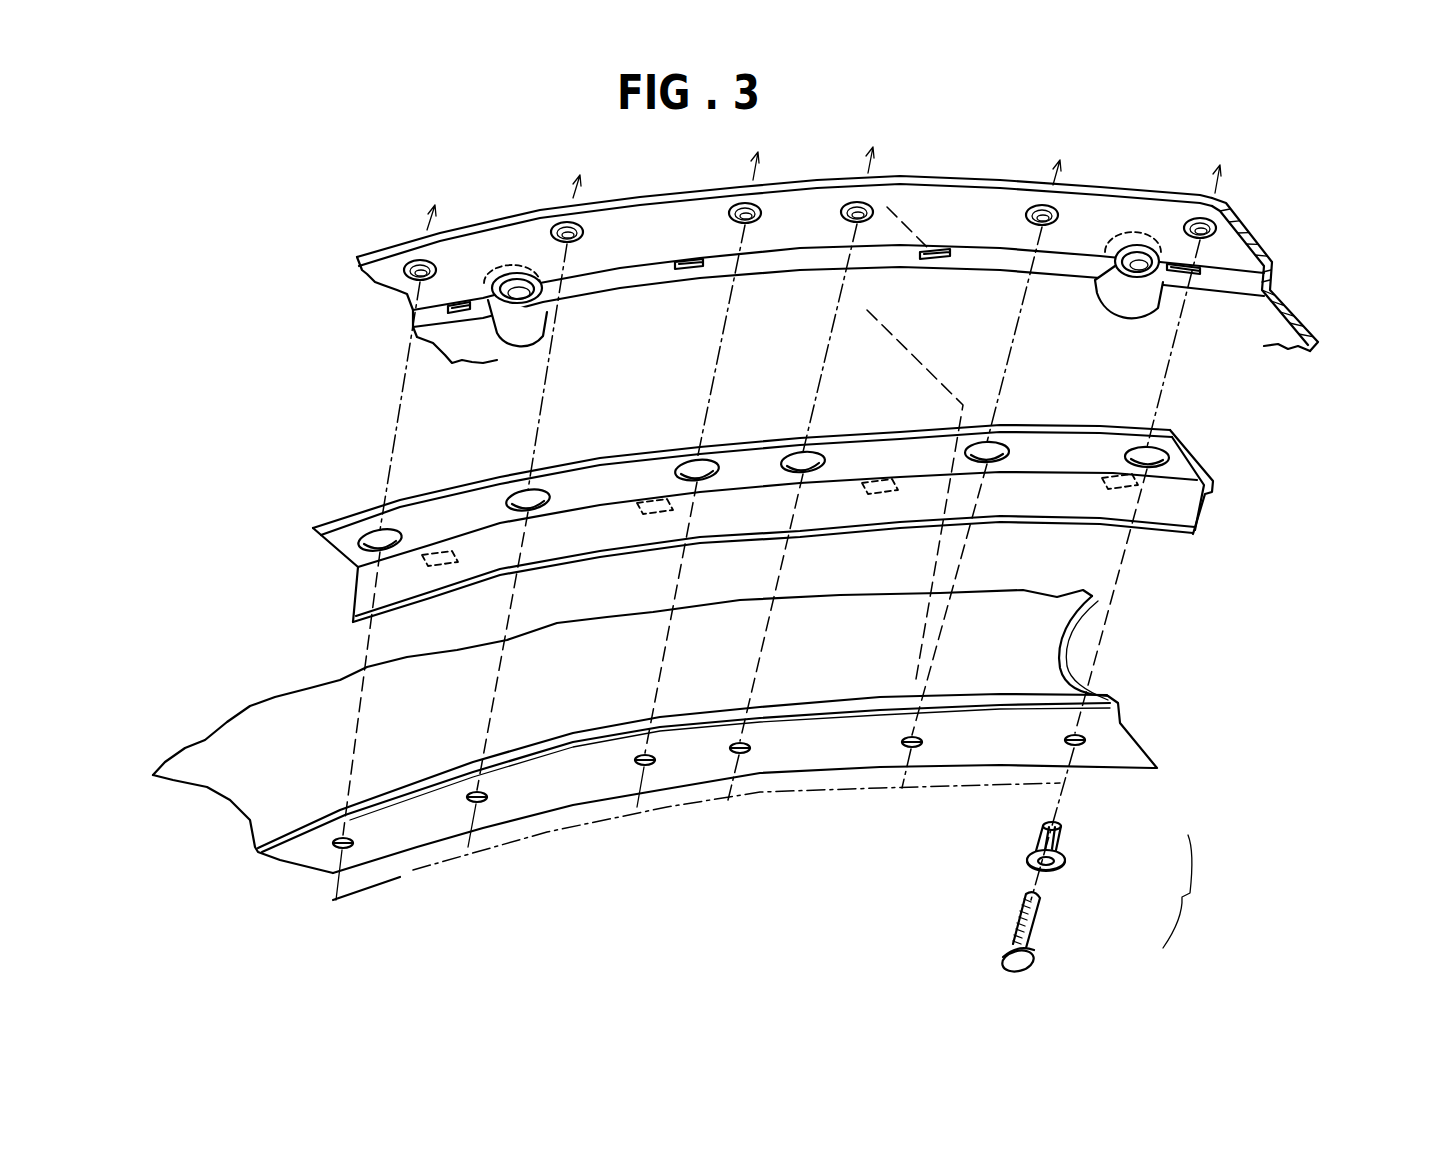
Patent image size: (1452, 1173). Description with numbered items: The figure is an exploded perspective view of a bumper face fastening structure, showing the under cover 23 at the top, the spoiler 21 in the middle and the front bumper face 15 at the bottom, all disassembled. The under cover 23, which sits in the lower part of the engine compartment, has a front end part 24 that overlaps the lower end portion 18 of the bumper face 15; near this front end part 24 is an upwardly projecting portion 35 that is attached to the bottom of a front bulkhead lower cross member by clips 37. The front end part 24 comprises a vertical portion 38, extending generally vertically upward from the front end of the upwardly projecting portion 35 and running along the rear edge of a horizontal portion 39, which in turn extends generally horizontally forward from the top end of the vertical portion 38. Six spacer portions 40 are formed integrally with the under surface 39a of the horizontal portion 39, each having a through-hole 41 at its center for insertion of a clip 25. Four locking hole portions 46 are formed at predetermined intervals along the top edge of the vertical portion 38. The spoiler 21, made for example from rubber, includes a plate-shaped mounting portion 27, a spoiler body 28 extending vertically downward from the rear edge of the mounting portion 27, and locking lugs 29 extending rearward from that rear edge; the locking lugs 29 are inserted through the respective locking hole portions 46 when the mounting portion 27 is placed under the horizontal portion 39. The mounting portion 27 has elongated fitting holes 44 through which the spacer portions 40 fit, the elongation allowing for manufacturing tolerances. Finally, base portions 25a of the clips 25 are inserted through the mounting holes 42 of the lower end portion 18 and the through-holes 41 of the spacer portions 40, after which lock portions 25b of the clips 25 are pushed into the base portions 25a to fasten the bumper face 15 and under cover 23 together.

The front bumper face 15 is at (290, 713).
The lower end portion 18 is at (582, 790).
The spoiler 21 is at (1220, 460).
The under cover 23 is at (1312, 292).
The front end part 24 is at (1266, 215).
The clip 25 is at (1130, 848).
The base portion 25a is at (1063, 842).
The lock portion 25b is at (1037, 937).
The mounting portion 27 is at (860, 432).
The spoiler body 28 is at (823, 525).
The locking lug 29 is at (433, 566).
The upwardly projecting portion 35 is at (500, 262).
The clip 37 is at (520, 300).
The vertical portion 38 is at (815, 268).
The horizontal portion 39 is at (950, 180).
The under surface 39a is at (1094, 207).
The spacer portion 40 is at (406, 272).
The through-hole 41 is at (420, 277).
The mounting hole 42 is at (335, 860).
The fitting hole 44 is at (385, 548).
The locking hole portion 46 is at (457, 313).